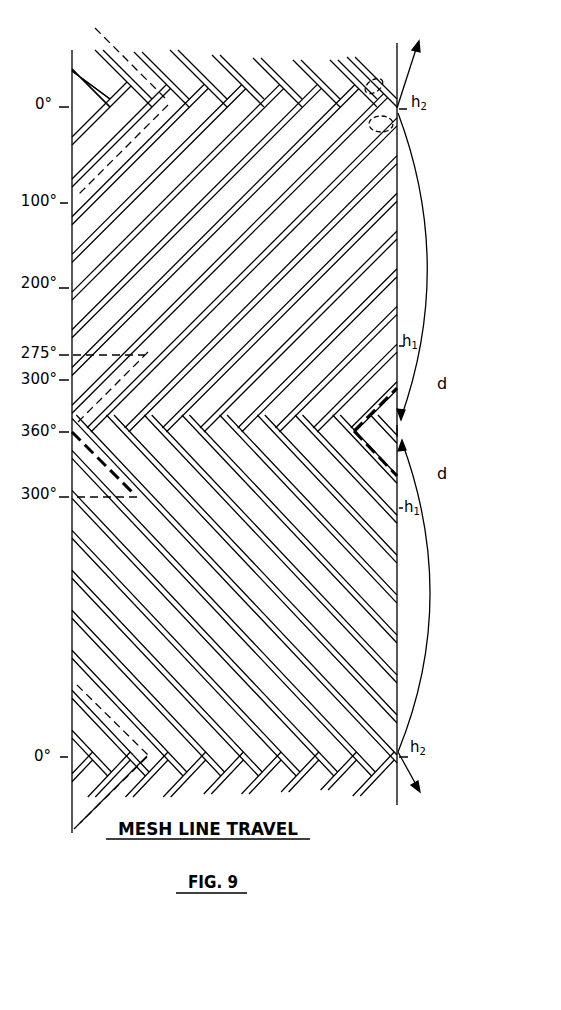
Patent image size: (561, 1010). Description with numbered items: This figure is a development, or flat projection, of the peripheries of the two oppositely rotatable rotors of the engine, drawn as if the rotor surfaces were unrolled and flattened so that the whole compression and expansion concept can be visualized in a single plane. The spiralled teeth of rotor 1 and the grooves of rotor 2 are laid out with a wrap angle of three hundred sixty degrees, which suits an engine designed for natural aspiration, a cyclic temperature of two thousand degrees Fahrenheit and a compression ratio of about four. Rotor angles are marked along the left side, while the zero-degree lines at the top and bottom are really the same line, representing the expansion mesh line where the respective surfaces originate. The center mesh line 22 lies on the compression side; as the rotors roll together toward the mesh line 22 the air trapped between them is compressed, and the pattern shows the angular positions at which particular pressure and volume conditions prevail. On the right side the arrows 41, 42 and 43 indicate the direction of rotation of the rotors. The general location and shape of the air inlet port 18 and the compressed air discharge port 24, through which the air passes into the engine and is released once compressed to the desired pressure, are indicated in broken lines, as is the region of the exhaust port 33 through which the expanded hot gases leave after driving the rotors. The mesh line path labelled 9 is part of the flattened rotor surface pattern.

The rotor 1 is at (399, 655).
The rotor 2 is at (398, 215).
The mesh line 9 is at (91, 107).
The air inlet port 18 is at (95, 514).
The mesh line 22 is at (403, 430).
The compressed air discharge port 24 is at (370, 452).
The exhaust port 33 is at (398, 125).
The arrow 41 is at (427, 285).
The arrow 42 is at (428, 667).
The arrow 43 is at (406, 87).